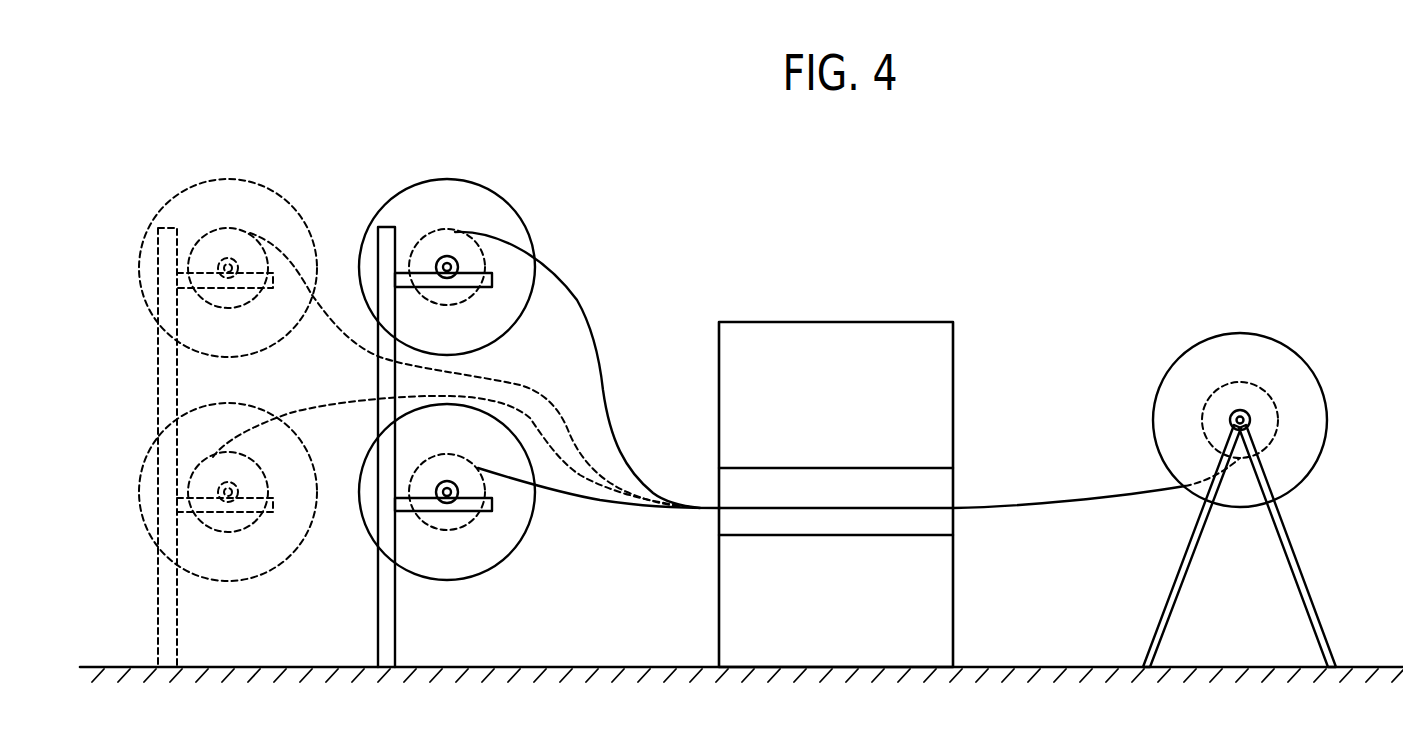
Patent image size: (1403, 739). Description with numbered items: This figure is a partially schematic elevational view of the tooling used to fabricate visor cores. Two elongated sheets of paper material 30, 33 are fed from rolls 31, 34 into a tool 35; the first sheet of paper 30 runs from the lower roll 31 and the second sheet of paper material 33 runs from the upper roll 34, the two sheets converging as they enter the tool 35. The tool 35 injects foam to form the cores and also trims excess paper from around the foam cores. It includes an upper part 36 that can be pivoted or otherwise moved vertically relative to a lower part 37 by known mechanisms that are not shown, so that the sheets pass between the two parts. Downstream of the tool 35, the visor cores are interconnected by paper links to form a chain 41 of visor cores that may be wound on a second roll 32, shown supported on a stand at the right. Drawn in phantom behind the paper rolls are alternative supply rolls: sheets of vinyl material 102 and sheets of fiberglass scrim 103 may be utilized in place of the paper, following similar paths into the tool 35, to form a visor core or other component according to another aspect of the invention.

The elongated sheet of paper material 30 is at (577, 500).
The roll 31 is at (520, 552).
The second roll 32 is at (1213, 348).
The elongated sheet of paper material 33 is at (577, 300).
The roll 34 is at (517, 213).
The tool 35 is at (962, 424).
The upper part 36 is at (720, 483).
The lower part 37 is at (730, 522).
The chain of visor cores 41 is at (1067, 505).
The sheet of vinyl material 102 is at (597, 360).
The sheet of fiberglass scrim 103 is at (327, 580).